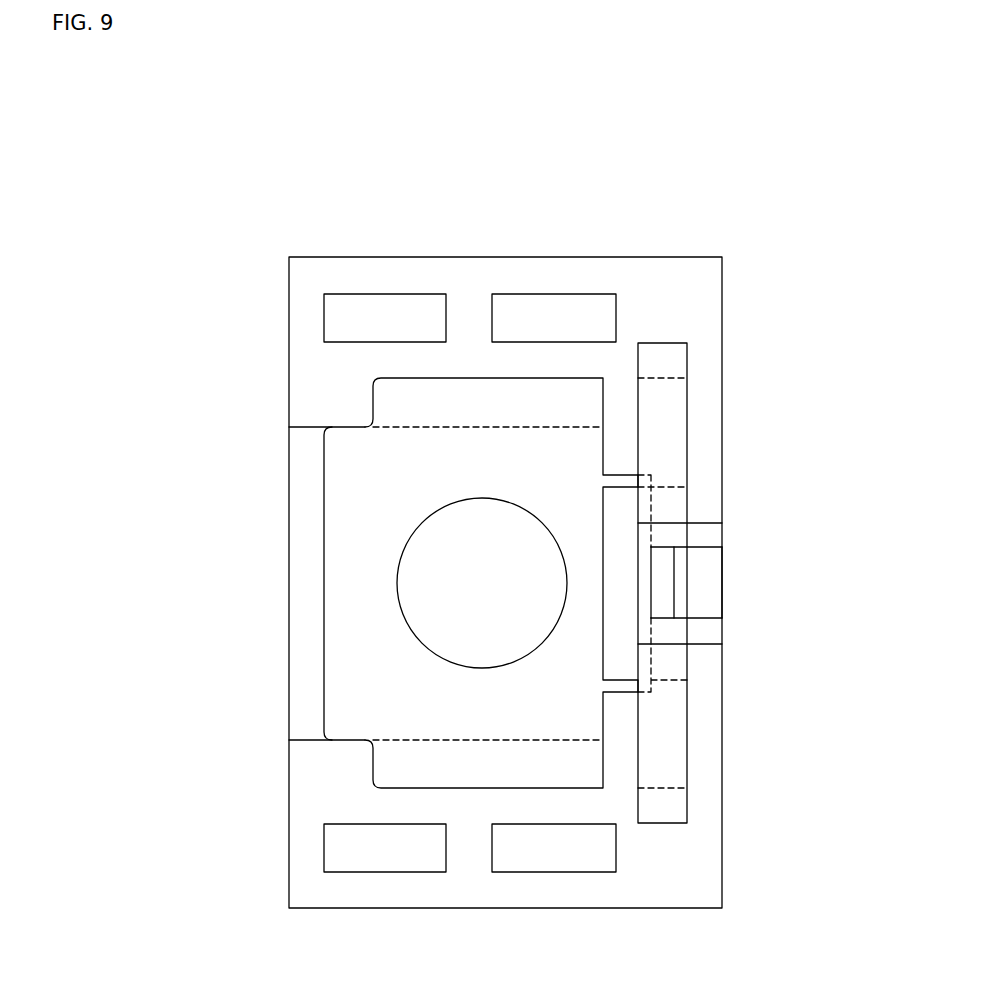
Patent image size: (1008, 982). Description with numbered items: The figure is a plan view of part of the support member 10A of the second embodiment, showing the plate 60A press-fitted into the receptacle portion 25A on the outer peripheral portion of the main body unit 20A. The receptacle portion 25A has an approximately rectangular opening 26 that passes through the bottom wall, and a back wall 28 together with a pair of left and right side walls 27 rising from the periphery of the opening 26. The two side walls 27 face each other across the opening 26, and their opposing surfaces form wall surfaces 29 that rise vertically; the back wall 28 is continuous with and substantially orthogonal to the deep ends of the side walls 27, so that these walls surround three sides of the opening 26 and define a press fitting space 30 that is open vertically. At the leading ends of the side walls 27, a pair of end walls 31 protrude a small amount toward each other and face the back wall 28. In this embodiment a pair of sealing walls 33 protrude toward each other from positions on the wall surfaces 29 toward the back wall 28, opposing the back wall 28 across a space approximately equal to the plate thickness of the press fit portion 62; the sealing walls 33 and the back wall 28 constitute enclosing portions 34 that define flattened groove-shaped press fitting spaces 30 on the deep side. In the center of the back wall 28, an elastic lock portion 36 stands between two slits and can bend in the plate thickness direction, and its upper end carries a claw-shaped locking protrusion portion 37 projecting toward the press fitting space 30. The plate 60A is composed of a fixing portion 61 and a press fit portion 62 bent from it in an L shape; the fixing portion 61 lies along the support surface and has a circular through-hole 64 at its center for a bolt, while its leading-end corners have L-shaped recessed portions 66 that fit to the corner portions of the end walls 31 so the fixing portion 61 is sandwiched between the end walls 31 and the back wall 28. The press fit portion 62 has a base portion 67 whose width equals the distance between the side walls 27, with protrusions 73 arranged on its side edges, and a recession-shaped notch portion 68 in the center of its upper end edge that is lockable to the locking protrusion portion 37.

The support member 10A is at (529, 117).
The main body unit 20A is at (722, 305).
The receptacle portion 25A is at (703, 277).
The opening 26 is at (325, 680).
The side walls 27 is at (470, 280).
The back wall 28 is at (716, 785).
The wall surfaces 29 is at (551, 378).
The press fitting space 30 is at (638, 380).
The end walls 31 is at (302, 408).
The sealing walls 33 is at (630, 420).
The enclosing portions 34 is at (692, 429).
The elastic lock portion 36 is at (722, 578).
The locking protrusion portion 37 is at (658, 600).
The plate 60A is at (688, 670).
The fixing portion 61 is at (348, 592).
The press fit portion 62 is at (683, 477).
The through-hole 64 is at (398, 580).
The recessed portions 66 is at (372, 408).
The base portion 67 is at (668, 706).
The notch portion 68 is at (675, 537).
The protrusion 73 is at (680, 352).